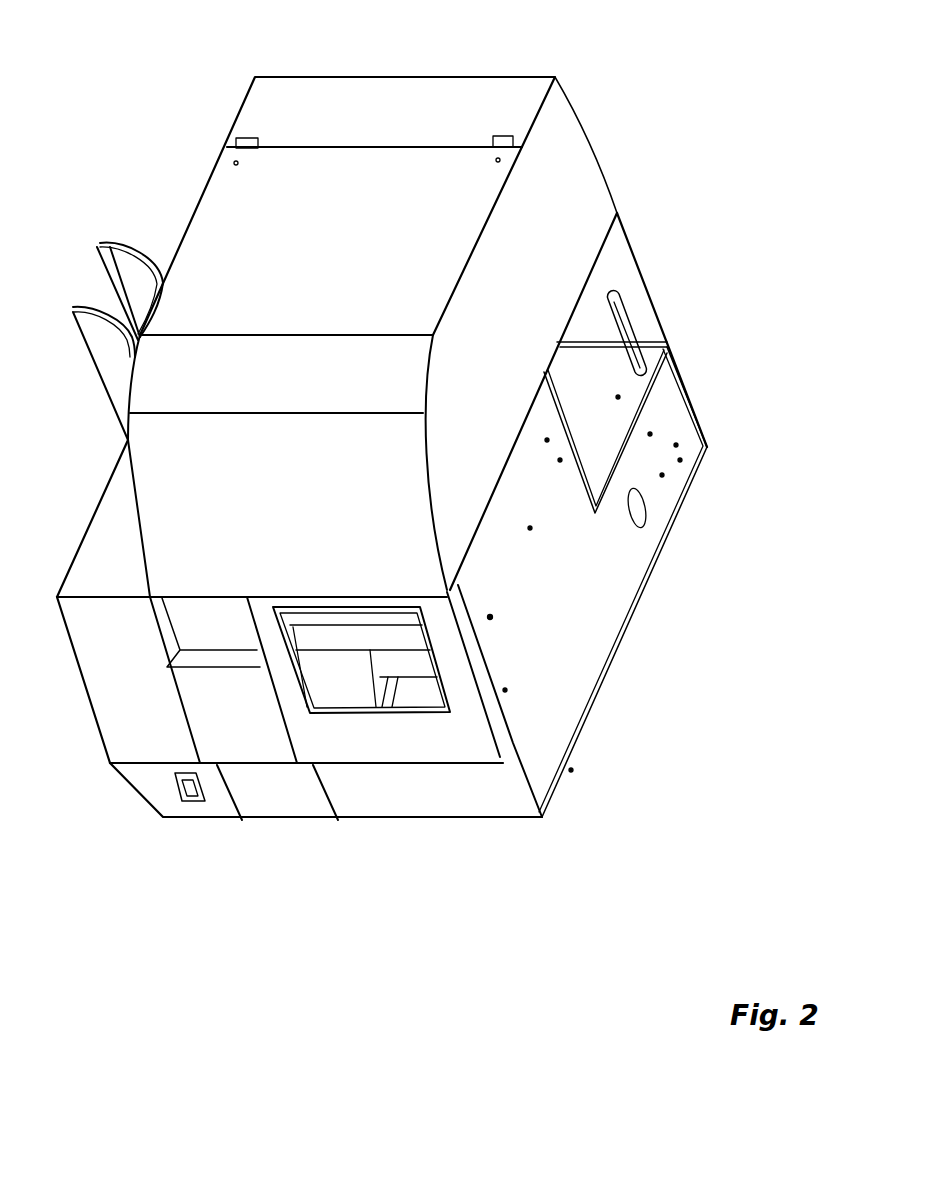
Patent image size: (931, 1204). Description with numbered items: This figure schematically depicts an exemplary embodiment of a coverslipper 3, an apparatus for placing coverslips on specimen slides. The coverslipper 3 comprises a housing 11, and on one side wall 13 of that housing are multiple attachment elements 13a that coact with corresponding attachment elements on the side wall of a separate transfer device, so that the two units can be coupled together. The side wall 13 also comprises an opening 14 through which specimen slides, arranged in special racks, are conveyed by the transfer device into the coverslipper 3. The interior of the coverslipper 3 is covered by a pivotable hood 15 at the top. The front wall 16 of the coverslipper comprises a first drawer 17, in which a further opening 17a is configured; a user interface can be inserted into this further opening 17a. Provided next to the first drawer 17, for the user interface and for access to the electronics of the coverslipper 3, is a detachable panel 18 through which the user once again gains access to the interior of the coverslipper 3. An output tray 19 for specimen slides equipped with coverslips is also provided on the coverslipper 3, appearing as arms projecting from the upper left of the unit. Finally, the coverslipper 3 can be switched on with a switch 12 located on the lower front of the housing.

The coverslipper 3 is at (192, 134).
The housing 11 is at (607, 185).
The switch 12 is at (180, 793).
The side wall 13 is at (580, 672).
The attachment elements 13a is at (543, 733).
The opening 14 is at (613, 287).
The pivotable hood 15 is at (222, 248).
The front wall 16 is at (290, 800).
The first drawer 17 is at (393, 790).
The further opening 17a is at (292, 605).
The detachable panel 18 is at (100, 697).
The output tray 19 is at (112, 347).